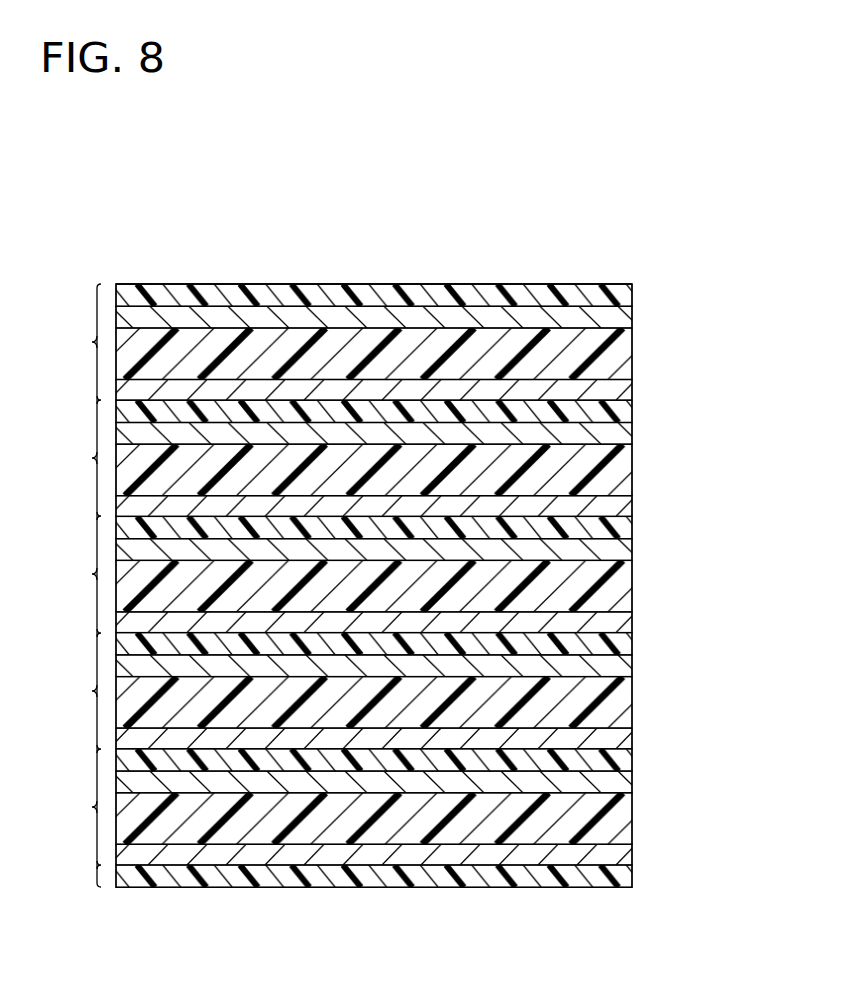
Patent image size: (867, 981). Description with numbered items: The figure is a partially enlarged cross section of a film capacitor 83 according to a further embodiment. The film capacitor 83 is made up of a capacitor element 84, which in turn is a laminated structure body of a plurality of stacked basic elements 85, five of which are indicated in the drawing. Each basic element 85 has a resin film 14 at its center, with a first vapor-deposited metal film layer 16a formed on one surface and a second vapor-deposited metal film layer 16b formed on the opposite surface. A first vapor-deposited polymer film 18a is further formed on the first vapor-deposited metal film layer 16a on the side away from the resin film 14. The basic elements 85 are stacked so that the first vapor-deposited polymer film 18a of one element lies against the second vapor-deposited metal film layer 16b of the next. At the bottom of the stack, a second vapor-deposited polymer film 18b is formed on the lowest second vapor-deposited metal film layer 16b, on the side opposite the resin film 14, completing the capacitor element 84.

The resin film 14 is at (341, 341).
The first vapor-deposited metal film layer 16a is at (538, 317).
The second vapor-deposited metal film layer 16b is at (259, 390).
The first vapor-deposited polymer film 18a is at (571, 296).
The second vapor-deposited polymer film 18b is at (192, 880).
The film capacitor 83 is at (433, 221).
The capacitor element 84 is at (209, 272).
The basic element 85 is at (84, 585).